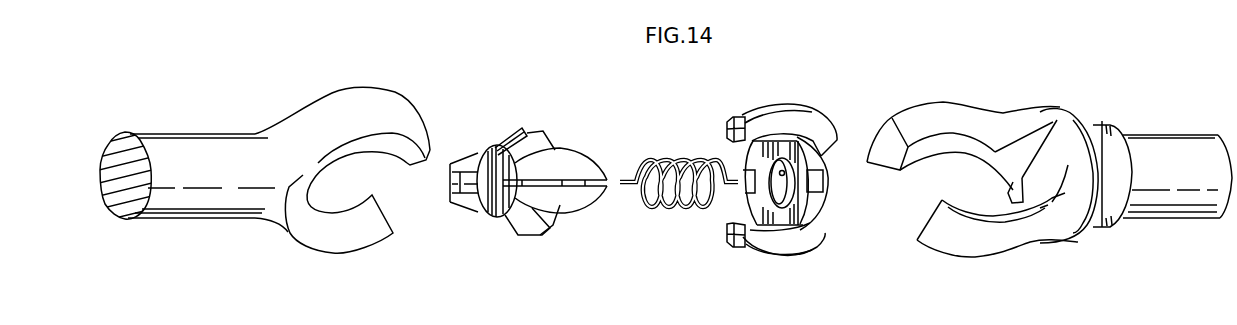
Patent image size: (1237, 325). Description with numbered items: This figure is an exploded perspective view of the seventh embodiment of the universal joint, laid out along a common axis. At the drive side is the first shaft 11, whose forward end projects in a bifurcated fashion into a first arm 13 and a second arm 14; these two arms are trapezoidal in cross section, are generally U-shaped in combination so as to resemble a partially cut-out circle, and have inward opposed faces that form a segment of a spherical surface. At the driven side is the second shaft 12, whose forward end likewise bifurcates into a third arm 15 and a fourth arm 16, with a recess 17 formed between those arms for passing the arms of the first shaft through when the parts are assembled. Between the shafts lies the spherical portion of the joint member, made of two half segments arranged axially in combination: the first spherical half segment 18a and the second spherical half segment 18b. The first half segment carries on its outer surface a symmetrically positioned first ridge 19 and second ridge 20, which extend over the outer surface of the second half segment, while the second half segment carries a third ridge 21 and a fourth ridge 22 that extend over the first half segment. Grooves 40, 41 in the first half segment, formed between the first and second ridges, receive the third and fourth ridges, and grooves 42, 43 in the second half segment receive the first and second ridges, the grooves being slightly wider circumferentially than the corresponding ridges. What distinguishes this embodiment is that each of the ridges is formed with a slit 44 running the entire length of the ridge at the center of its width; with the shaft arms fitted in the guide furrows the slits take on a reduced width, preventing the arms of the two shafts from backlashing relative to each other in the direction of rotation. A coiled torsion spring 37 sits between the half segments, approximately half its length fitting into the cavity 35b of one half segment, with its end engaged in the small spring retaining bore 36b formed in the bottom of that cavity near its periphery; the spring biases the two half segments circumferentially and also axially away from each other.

The first shaft 11 is at (192, 218).
The second shaft 12 is at (1145, 220).
The first arm 13 is at (352, 88).
The second arm 14 is at (333, 243).
The third arm 15 is at (918, 98).
The fourth arm 16 is at (987, 250).
The recess 17 is at (1023, 157).
The first spherical half segment 18a is at (495, 147).
The second spherical half segment 18b is at (827, 207).
The first ridge 19 is at (573, 161).
The second ridge 20 is at (473, 205).
The third ridge 21 is at (820, 120).
The fourth ridge 22 is at (802, 247).
The cavity 35b is at (777, 192).
The spring retaining bore 36b is at (753, 160).
The coiled torsion spring 37 is at (652, 207).
The groove 40 is at (530, 127).
The groove 41 is at (514, 236).
The groove 42 is at (823, 181).
The groove 43 is at (780, 175).
The slit 44 is at (735, 116).